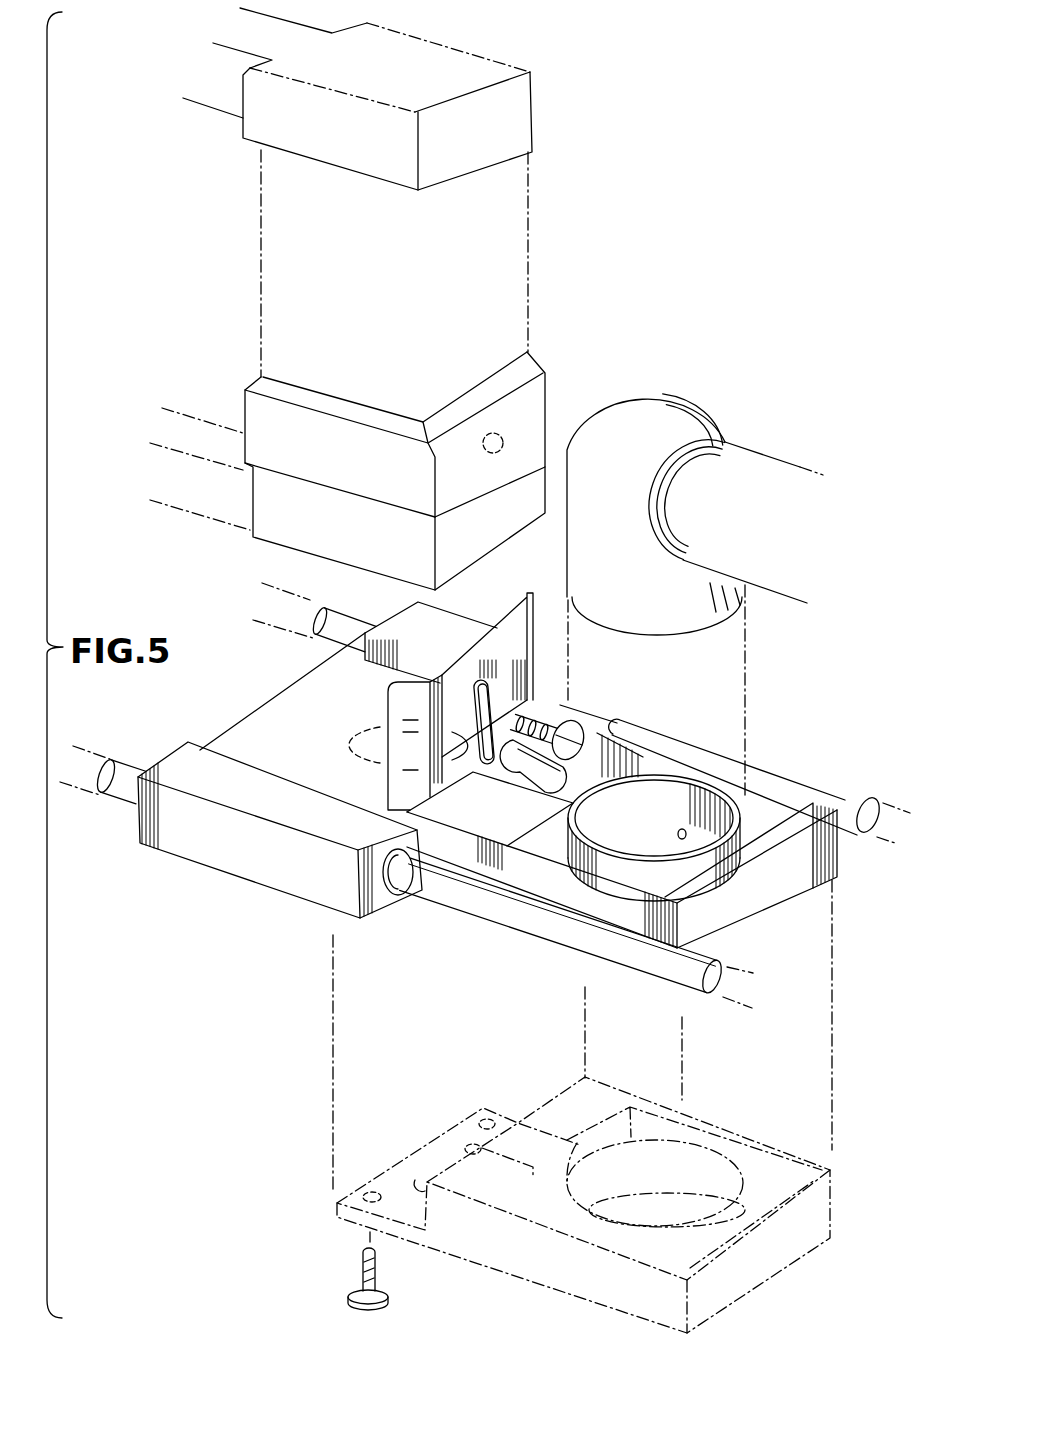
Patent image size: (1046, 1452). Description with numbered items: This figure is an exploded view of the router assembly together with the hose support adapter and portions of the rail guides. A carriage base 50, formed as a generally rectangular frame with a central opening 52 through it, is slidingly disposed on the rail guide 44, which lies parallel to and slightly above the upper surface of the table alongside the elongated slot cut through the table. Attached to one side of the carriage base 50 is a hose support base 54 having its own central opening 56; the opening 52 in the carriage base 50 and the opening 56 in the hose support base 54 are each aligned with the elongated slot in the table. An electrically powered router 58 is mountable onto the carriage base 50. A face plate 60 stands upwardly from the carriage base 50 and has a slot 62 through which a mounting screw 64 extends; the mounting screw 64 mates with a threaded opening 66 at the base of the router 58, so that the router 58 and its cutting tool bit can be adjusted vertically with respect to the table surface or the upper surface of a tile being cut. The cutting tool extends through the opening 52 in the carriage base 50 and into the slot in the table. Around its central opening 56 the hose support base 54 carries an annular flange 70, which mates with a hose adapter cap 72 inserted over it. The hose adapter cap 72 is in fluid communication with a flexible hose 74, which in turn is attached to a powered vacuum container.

The rail guide 44 is at (857, 800).
The carriage base 50 is at (277, 707).
The central opening 52 is at (364, 736).
The hose support base 54 is at (793, 803).
The central opening 56 is at (745, 795).
The router 58 is at (528, 296).
The face plate 60 is at (526, 602).
The slot 62 is at (492, 693).
The mounting screw 64 is at (640, 727).
The threaded opening 66 is at (520, 437).
The annular flange 70 is at (682, 832).
The hose adapter cap 72 is at (703, 403).
The flexible hose 74 is at (737, 448).